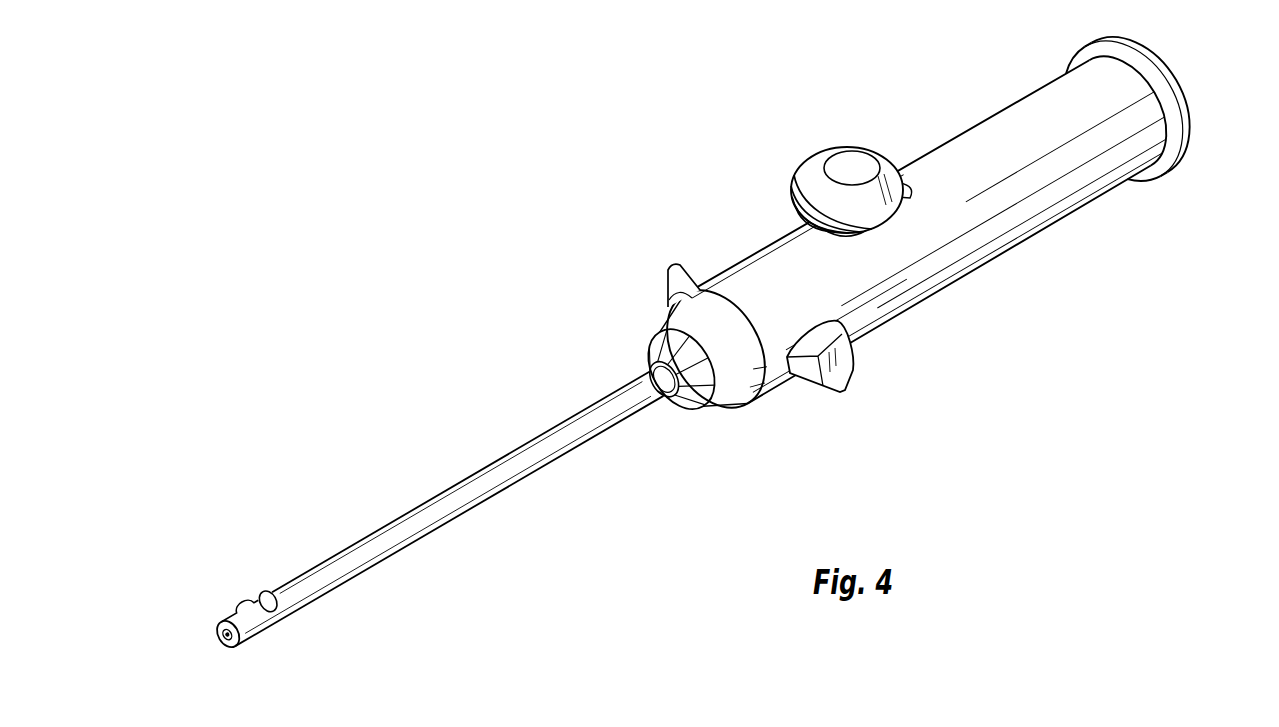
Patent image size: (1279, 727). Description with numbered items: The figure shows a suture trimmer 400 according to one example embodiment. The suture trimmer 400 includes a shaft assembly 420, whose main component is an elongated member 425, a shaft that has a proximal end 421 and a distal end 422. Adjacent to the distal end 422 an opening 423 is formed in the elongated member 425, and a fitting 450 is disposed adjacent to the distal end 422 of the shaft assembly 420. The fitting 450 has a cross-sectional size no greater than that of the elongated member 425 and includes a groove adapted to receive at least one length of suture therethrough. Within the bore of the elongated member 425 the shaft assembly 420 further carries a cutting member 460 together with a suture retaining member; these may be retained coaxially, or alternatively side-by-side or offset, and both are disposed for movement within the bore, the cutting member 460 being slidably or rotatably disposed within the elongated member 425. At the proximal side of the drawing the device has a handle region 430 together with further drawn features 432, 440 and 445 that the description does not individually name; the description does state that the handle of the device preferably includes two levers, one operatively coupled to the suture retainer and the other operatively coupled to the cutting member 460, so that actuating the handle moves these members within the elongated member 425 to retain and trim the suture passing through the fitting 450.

The suture trimmer 400 is at (658, 126).
The shaft assembly 420 is at (428, 458).
The proximal end 421 is at (720, 398).
The distal end 422 is at (244, 644).
The opening 423 is at (256, 594).
The elongated member 425 is at (463, 497).
The handle body 430 is at (1012, 92).
The flange 432 is at (1183, 80).
The thumbwheel knob 440 is at (830, 139).
The tab 445 is at (856, 380).
The fitting 450 is at (229, 621).
The cutting member 460 is at (278, 611).